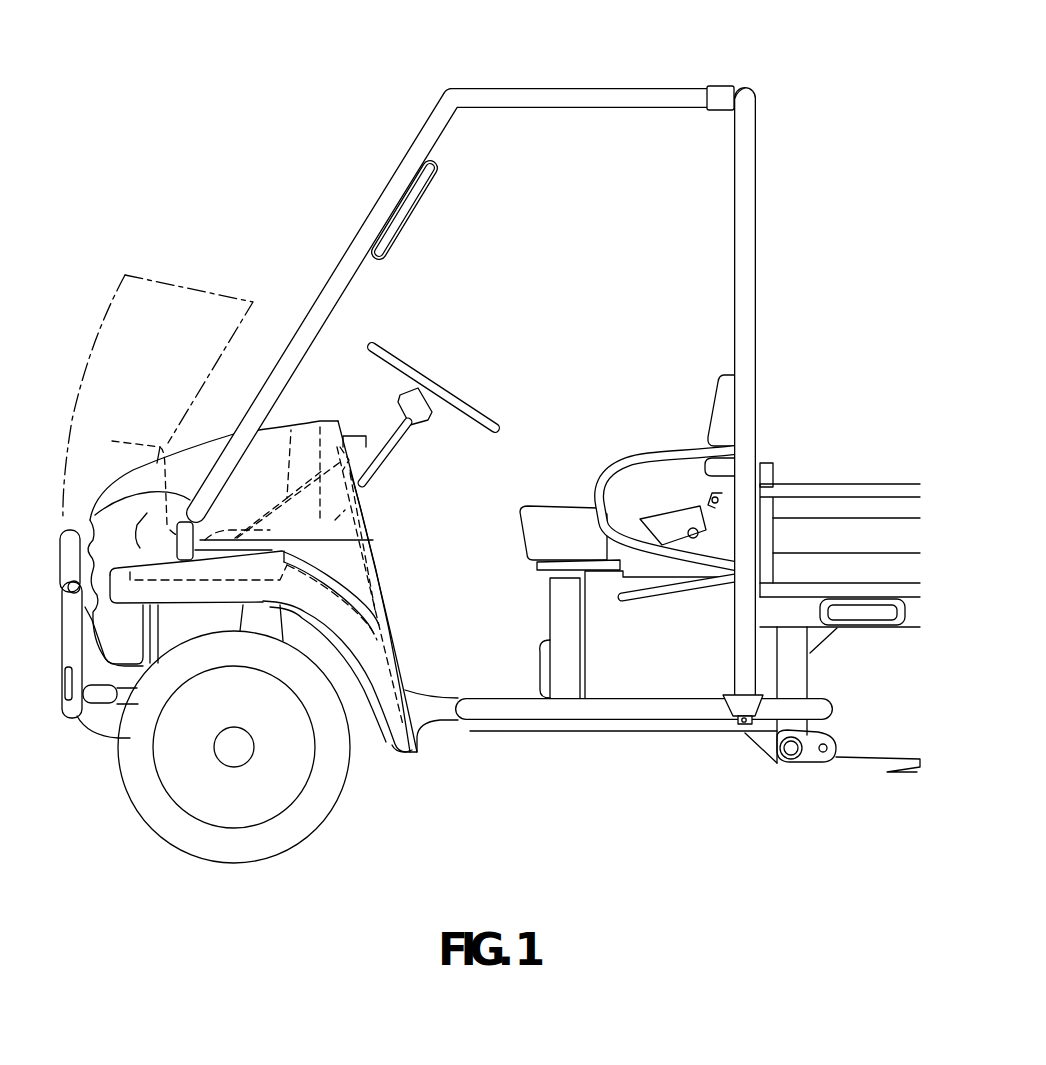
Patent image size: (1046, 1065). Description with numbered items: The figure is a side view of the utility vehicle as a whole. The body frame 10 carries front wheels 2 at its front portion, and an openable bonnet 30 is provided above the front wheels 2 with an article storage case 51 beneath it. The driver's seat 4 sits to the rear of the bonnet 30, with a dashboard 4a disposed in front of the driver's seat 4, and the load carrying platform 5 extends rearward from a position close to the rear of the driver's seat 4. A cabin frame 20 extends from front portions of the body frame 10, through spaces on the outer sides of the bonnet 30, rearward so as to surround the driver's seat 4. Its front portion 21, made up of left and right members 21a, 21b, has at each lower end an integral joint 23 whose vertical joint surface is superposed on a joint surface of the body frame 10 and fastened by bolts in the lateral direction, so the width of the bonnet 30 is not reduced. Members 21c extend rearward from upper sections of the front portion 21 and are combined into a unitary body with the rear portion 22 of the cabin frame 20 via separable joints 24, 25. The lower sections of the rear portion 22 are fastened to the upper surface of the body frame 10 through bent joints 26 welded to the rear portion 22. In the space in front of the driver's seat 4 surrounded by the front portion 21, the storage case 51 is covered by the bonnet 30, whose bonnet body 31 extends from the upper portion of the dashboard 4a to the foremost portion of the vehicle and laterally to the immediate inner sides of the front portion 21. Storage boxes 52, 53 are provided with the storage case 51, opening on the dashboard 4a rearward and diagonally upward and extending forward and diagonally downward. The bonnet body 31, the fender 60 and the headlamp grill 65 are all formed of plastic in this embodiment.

The front wheels 2 is at (243, 800).
The driver's seat 4 is at (538, 520).
The dashboard 4a is at (366, 503).
The load carrying platform 5 is at (838, 505).
The body frame 10 is at (600, 712).
The cabin frame 20 is at (408, 66).
The front portion of cabin frame 21 is at (452, 305).
The front portion member 21a is at (432, 137).
The front portion member 21b is at (404, 210).
The members extending rearward 21c is at (603, 100).
The rear portion of cabin frame 22 is at (752, 181).
The joint 23 is at (206, 511).
The separable joint 24 is at (720, 87).
The separable joint 25 is at (741, 88).
The joint 26 is at (737, 720).
The bonnet 30 is at (144, 462).
The bonnet body 31 is at (143, 477).
The storage case 51 is at (284, 462).
The storage box 52 is at (326, 448).
The storage box 53 is at (321, 428).
The fender 60 is at (372, 652).
The headlamp grill 65 is at (80, 525).